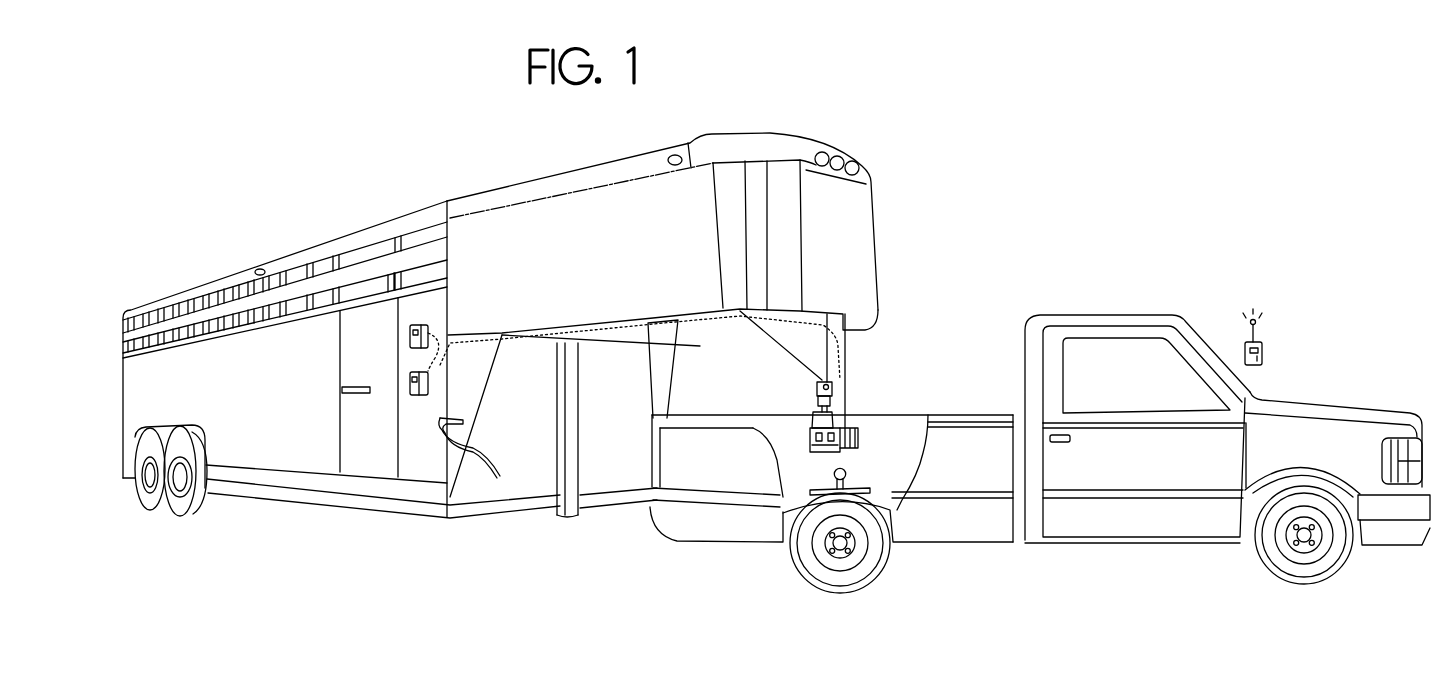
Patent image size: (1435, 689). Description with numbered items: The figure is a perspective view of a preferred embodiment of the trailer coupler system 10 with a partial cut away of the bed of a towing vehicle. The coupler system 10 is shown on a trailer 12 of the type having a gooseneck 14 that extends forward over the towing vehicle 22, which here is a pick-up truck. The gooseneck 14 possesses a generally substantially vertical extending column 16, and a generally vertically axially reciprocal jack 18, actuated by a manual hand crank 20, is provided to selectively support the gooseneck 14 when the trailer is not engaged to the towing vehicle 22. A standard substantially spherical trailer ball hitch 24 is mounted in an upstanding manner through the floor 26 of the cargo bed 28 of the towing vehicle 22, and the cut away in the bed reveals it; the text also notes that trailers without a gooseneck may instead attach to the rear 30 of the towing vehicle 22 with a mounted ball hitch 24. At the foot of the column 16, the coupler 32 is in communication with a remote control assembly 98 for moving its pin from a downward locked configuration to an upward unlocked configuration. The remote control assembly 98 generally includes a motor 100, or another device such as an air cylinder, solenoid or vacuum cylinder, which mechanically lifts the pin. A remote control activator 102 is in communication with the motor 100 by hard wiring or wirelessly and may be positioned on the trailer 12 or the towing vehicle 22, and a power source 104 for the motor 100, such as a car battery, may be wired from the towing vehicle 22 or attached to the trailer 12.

The trailer coupler system 10 is at (943, 326).
The trailer 12 is at (345, 241).
The gooseneck 14 is at (852, 339).
The column 16 is at (847, 375).
The jack 18 is at (560, 483).
The hand crank 20 is at (442, 427).
The towing vehicle 22 is at (975, 540).
The trailer ball hitch 24 is at (834, 472).
The floor 26 is at (892, 505).
The cargo bed 28 is at (947, 473).
The rear 30 is at (652, 505).
The coupler 32 is at (860, 448).
The remote control assembly 98 is at (408, 387).
The motor 100 is at (815, 385).
The remote control activator 102 is at (408, 380).
The power source 104 is at (420, 325).